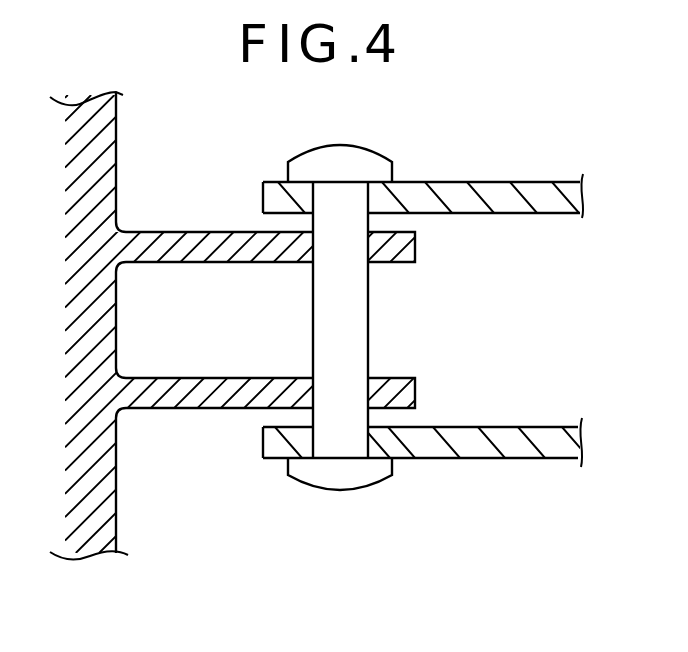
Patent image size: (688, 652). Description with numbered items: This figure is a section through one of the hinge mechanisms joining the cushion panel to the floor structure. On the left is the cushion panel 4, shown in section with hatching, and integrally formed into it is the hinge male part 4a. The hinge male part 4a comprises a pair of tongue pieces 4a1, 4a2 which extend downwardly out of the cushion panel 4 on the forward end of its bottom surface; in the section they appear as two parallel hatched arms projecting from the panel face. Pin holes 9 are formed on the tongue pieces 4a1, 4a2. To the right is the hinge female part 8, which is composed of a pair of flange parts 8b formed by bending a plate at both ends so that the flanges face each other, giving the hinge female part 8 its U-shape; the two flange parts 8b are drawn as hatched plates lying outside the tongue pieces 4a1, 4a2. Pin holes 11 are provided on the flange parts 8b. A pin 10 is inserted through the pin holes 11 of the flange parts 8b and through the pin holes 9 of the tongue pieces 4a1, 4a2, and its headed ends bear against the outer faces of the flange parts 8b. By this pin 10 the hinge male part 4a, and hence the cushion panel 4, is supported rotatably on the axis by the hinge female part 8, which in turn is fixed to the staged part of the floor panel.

The cushion panel 4 is at (72, 553).
The hinge male part 4a is at (214, 364).
The tongue piece 4a1 is at (162, 232).
The tongue piece 4a2 is at (208, 408).
The hinge female part 8 is at (429, 290).
The flange part 8b is at (445, 182).
The pin hole 9 is at (375, 262).
The pin 10 is at (370, 347).
The pin hole 11 is at (372, 438).